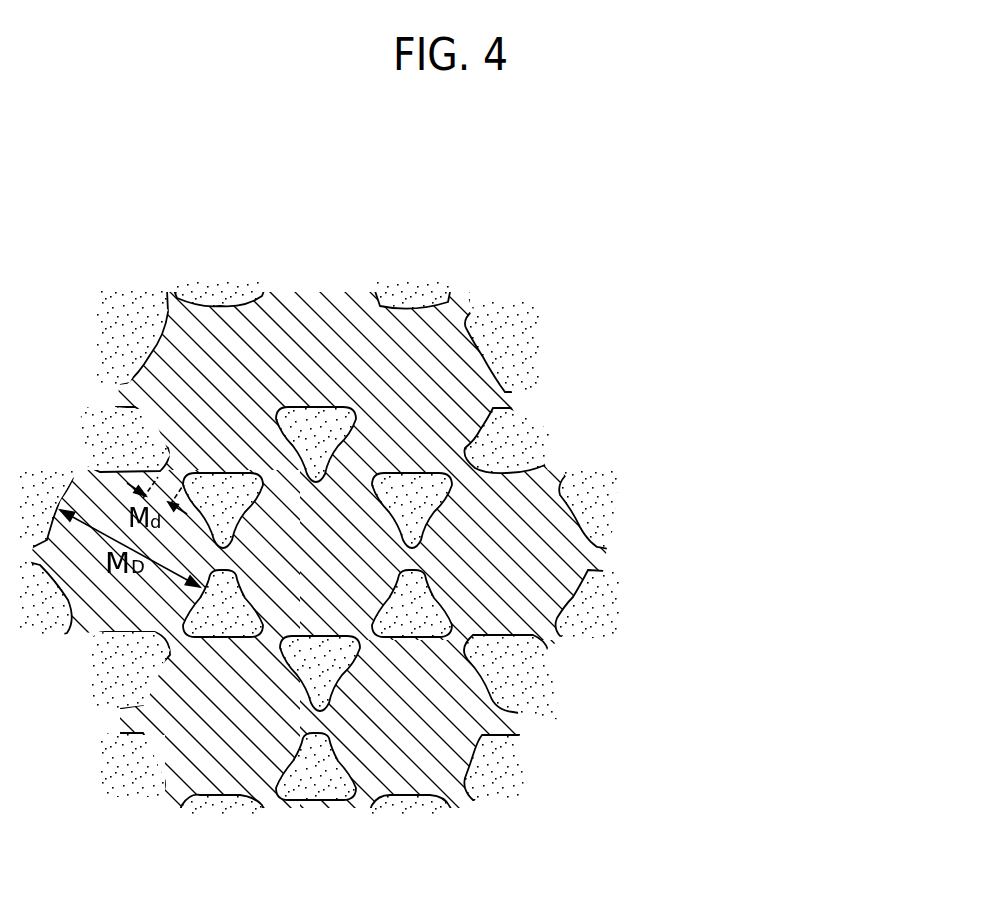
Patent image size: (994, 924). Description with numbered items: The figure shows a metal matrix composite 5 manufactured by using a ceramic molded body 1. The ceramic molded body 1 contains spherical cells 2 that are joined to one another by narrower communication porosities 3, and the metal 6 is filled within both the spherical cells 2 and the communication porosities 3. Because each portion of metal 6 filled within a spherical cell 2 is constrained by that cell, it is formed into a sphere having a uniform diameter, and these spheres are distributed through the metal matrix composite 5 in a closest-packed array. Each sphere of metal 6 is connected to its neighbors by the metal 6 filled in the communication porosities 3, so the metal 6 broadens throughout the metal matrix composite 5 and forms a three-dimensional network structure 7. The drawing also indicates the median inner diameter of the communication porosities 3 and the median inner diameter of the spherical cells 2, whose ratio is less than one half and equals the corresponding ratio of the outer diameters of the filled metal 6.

The ceramic molded body 1 is at (422, 526).
The spherical cell 2 is at (487, 352).
The communication porosity 3 is at (470, 468).
The metal matrix composite 5 is at (497, 462).
The metal 6 is at (358, 573).
The three-dimensional network structure 7 is at (469, 526).